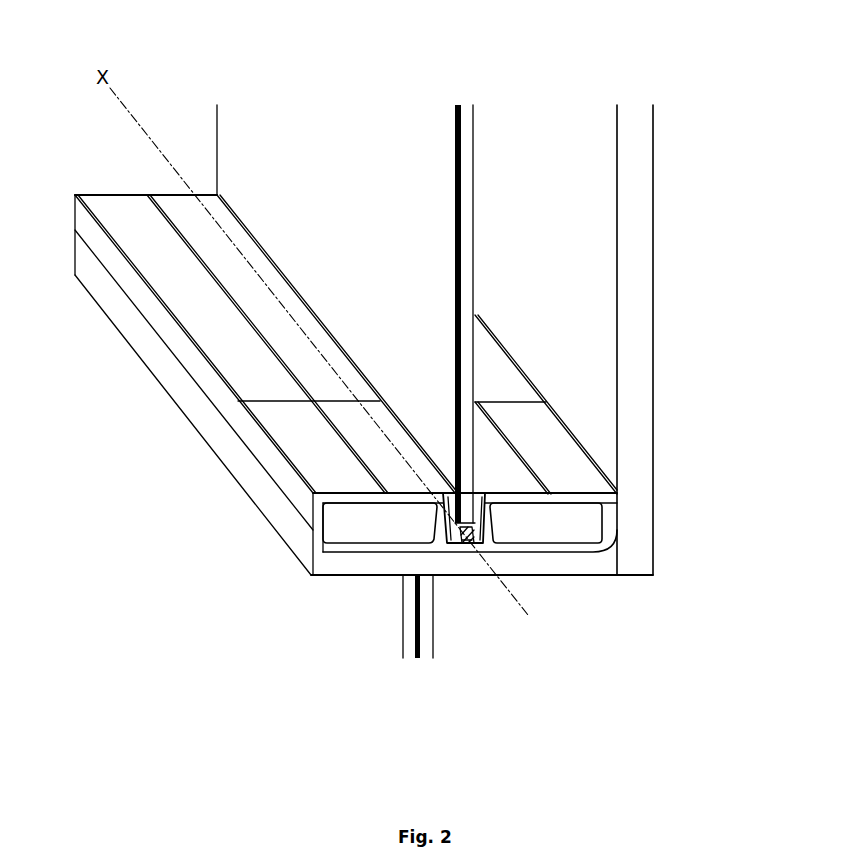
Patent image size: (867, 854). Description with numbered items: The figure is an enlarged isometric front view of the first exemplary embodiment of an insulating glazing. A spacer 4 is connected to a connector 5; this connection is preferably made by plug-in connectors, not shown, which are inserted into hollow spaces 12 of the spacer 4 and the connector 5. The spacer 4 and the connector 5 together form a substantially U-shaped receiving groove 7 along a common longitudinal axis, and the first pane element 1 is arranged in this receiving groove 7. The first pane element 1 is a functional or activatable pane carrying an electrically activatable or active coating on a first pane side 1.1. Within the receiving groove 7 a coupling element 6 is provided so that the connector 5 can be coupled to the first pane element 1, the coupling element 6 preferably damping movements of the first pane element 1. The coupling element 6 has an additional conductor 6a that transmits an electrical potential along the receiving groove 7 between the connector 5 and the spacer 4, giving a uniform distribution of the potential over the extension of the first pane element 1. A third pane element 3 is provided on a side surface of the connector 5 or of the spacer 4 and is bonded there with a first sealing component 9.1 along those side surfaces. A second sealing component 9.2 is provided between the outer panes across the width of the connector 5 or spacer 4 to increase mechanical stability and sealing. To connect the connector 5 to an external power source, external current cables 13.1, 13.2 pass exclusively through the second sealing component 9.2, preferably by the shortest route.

The first pane element 1 is at (468, 223).
The first pane side 1.1 is at (393, 190).
The third pane element 3 is at (627, 232).
The spacer 4 is at (133, 233).
The connector 5 is at (560, 460).
The coupling element 6 is at (452, 533).
The additional conductor 6a is at (467, 541).
The receiving groove 7 is at (487, 530).
The first sealing component 9.1 is at (197, 365).
The second sealing component 9.2 is at (595, 563).
The hollow spaces 12 is at (362, 520).
The external current cable 13.1 is at (418, 638).
The external current cable 13.2 is at (402, 618).